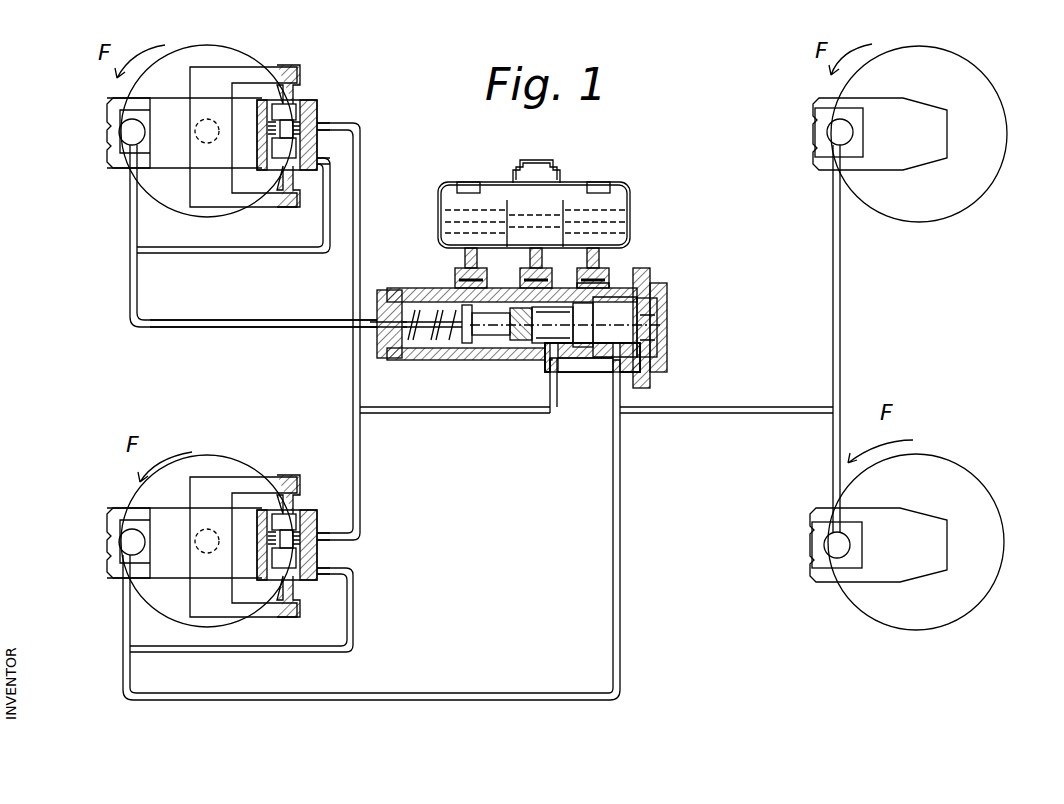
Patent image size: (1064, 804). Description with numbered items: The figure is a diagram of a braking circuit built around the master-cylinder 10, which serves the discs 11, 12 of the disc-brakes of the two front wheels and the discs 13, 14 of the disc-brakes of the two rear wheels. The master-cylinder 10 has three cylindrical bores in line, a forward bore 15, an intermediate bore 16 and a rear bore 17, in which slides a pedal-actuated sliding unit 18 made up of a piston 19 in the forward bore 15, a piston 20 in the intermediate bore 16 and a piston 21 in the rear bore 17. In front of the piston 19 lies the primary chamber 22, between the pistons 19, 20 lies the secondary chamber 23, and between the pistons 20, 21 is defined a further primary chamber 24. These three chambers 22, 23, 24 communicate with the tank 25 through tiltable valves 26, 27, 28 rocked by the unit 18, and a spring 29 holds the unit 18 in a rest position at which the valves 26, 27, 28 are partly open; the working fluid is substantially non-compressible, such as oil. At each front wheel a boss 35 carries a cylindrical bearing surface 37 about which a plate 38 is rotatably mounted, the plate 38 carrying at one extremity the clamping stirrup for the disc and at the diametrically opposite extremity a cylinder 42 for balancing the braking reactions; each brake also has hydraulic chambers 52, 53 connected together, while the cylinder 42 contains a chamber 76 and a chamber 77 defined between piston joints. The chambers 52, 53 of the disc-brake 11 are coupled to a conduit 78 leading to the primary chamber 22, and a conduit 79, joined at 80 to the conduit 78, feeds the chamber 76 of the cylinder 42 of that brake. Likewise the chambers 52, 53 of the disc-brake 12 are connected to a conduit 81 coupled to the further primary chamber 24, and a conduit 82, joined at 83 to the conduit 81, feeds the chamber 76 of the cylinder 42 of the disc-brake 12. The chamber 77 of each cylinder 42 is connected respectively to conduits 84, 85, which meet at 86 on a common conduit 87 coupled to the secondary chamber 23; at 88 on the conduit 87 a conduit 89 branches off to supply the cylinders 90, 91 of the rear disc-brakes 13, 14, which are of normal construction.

The master-cylinder 10 is at (549, 283).
The disc 11 is at (245, 50).
The disc 12 is at (217, 456).
The disc 13 is at (993, 86).
The disc 14 is at (972, 473).
The forward bore 15 is at (425, 345).
The intermediate bore 16 is at (553, 346).
The rear bore 17 is at (600, 350).
The sliding unit 18 is at (656, 313).
The piston 19 is at (518, 350).
The piston 20 is at (584, 350).
The piston 21 is at (655, 372).
The primary chamber 22 is at (424, 298).
The secondary chamber 23 is at (578, 300).
The further primary chamber 24 is at (655, 283).
The tank 25 is at (640, 186).
The tiltable valve 26 is at (466, 292).
The tiltable valve 27 is at (534, 298).
The tiltable valve 28 is at (622, 282).
The spring 29 is at (450, 347).
The boss 35 is at (196, 191).
The cylindrical bearing surface 37 is at (194, 132).
The plate 38 is at (153, 100).
The cylinder 42 is at (326, 99).
The hydraulic chamber 52 is at (110, 132).
The hydraulic chamber 53 is at (116, 138).
The chamber 76 is at (313, 155).
The chamber 77 is at (326, 124).
The conduit 78 is at (128, 320).
The conduit 79 is at (248, 253).
The connection 80 is at (128, 255).
The conduit 81 is at (410, 692).
The conduit 82 is at (355, 614).
The connection 83 is at (124, 648).
The conduit 84 is at (353, 262).
The conduit 85 is at (362, 470).
The connection 86 is at (352, 404).
The conduit 87 is at (468, 416).
The connection 88 is at (547, 416).
The conduit 89 is at (760, 415).
The cylinder 90 is at (830, 132).
The cylinder 91 is at (828, 545).